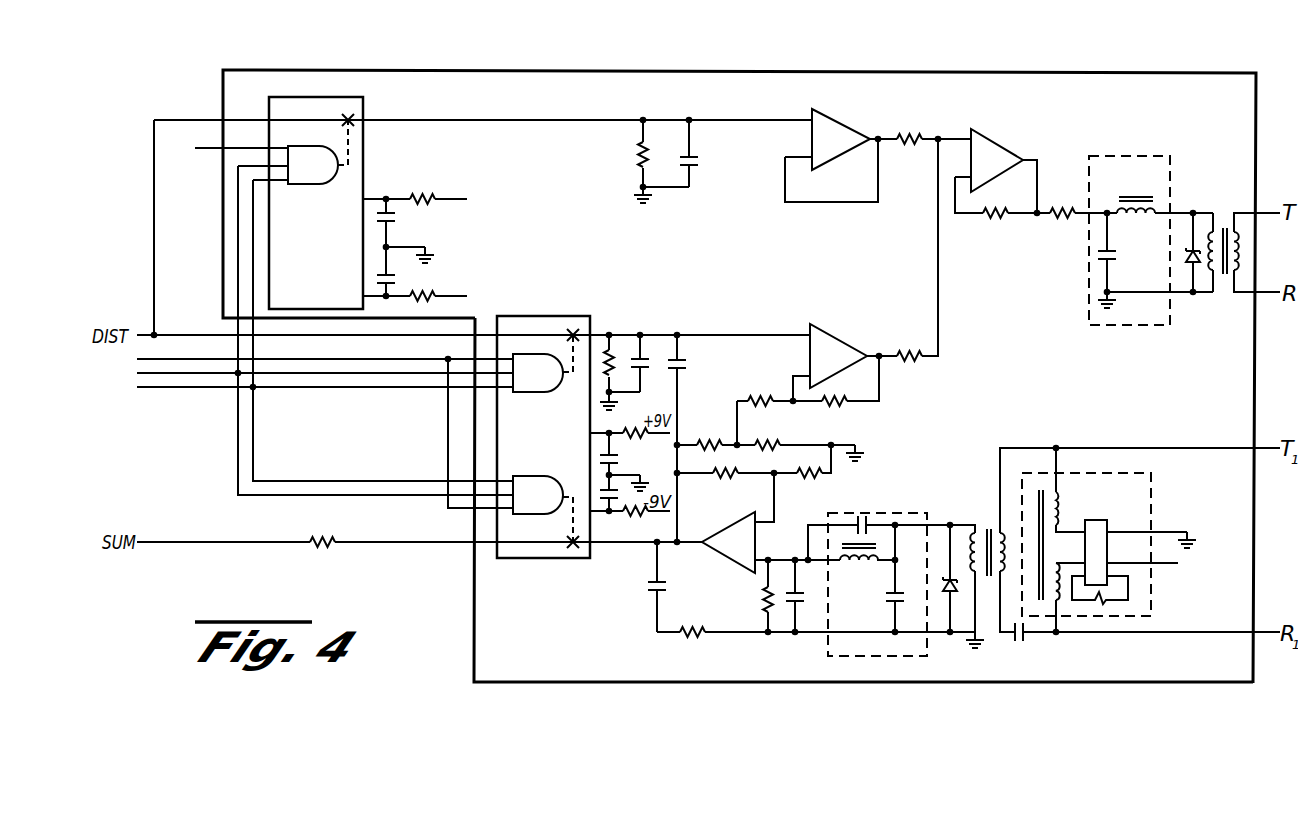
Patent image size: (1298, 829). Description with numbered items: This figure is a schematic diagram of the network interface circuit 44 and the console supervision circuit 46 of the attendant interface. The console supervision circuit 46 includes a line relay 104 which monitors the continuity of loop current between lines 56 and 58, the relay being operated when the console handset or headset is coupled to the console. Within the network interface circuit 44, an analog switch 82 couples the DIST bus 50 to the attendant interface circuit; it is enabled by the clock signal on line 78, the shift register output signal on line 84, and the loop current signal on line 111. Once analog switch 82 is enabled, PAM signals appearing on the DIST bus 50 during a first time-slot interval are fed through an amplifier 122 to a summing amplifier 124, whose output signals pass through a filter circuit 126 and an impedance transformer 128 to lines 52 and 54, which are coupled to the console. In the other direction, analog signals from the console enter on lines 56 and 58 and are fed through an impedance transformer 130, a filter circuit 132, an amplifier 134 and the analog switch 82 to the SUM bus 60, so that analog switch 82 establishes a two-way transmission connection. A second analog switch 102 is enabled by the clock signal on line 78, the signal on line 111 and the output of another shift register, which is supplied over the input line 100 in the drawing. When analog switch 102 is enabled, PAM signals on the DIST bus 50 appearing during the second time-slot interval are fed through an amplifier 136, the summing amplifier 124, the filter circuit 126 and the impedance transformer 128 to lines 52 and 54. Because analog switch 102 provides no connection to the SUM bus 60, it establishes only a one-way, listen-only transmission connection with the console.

The network interface circuit 44 is at (424, 71).
The console supervision circuit 46 is at (1153, 501).
The DIST bus 50 is at (168, 335).
The line 52 is at (1270, 212).
The line 54 is at (1273, 294).
The line 56 is at (1267, 447).
The line 58 is at (1267, 631).
The SUM bus 60 is at (188, 540).
The line 78 is at (173, 362).
The analog switch 82 is at (548, 316).
The line 84 is at (153, 372).
The input line 100 is at (200, 150).
The analog switch 102 is at (355, 179).
The line relay 104 is at (1094, 524).
The line 111 is at (202, 386).
The amplifier 122 is at (843, 333).
The summing amplifier 124 is at (1003, 134).
The filter circuit 126 is at (1135, 154).
The impedance transformer 128 is at (1223, 273).
The impedance transformer 130 is at (988, 530).
The filter circuit 132 is at (892, 512).
The amplifier 134 is at (810, 684).
The amplifier 136 is at (843, 121).